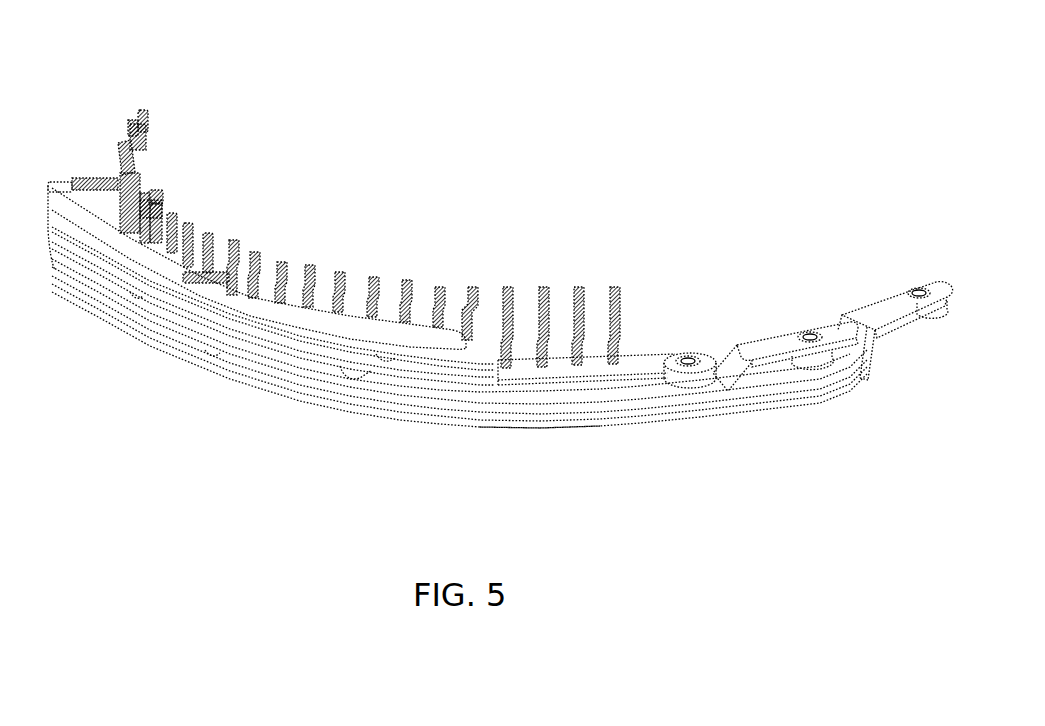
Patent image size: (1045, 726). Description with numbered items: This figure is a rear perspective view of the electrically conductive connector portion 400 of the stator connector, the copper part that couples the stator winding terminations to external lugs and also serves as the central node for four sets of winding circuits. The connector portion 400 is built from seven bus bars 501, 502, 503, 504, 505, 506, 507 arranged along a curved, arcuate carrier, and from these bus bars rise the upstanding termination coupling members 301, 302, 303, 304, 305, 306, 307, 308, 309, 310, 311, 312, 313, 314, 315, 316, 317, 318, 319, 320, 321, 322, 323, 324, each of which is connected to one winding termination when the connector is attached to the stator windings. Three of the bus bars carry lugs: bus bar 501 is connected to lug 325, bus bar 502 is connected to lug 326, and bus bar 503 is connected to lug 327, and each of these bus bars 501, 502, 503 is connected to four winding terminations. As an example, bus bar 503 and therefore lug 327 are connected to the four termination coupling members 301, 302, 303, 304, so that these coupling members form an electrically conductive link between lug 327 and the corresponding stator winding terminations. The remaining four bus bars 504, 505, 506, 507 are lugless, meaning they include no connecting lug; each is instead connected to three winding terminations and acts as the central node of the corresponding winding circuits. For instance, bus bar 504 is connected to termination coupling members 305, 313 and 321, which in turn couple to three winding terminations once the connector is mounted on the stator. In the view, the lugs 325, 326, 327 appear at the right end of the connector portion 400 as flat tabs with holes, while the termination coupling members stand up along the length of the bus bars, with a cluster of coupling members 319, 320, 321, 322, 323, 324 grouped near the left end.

The electrically conductive connector portion 400 is at (650, 62).
The termination coupling member 301 is at (614, 289).
The termination coupling member 302 is at (578, 289).
The termination coupling member 303 is at (543, 289).
The termination coupling member 304 is at (508, 289).
The termination coupling member 305 is at (477, 288).
The termination coupling member 306 is at (438, 287).
The termination coupling member 307 is at (404, 280).
The termination coupling member 308 is at (372, 277).
The termination coupling member 309 is at (338, 272).
The termination coupling member 310 is at (308, 265).
The termination coupling member 311 is at (280, 262).
The termination coupling member 312 is at (253, 252).
The termination coupling member 313 is at (232, 240).
The termination coupling member 314 is at (212, 240).
The termination coupling member 315 is at (188, 228).
The termination coupling member 316 is at (172, 222).
The termination coupling member 317 is at (158, 205).
The termination coupling member 318 is at (157, 190).
The termination coupling member 319 is at (128, 180).
The termination coupling member 320 is at (138, 172).
The termination coupling member 321 is at (127, 155).
The termination coupling member 322 is at (143, 145).
The termination coupling member 323 is at (137, 128).
The termination coupling member 324 is at (142, 112).
The lug 325 is at (920, 276).
The lug 326 is at (808, 320).
The lug 327 is at (688, 343).
The bus bar 501 is at (797, 383).
The bus bar 502 is at (592, 395).
The bus bar 503 is at (647, 363).
The bus bar 504 is at (288, 317).
The bus bar 505 is at (308, 342).
The bus bar 506 is at (355, 363).
The bus bar 507 is at (212, 355).